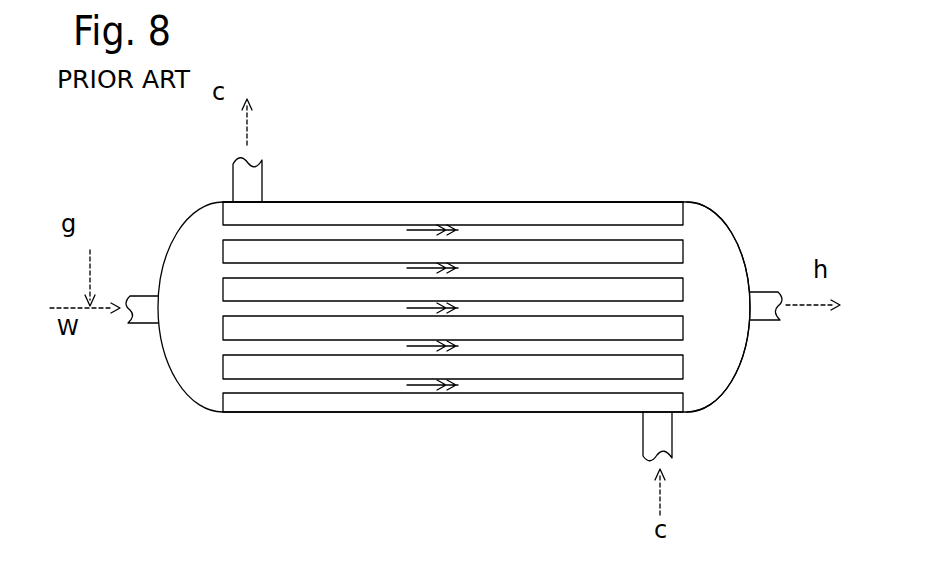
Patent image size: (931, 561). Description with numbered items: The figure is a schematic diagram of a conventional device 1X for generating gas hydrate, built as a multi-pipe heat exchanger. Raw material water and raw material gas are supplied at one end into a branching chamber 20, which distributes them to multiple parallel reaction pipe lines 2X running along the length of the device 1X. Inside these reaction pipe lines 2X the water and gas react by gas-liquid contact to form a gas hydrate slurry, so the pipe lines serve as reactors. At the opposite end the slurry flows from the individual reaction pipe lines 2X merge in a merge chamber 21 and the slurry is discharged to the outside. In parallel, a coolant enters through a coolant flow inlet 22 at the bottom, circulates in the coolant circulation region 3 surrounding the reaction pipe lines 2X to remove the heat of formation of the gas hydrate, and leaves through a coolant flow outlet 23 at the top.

The device for generating gas hydrate 1X is at (454, 264).
The reaction pipe lines 2X is at (518, 230).
The coolant circulation region 3 is at (603, 211).
The branching chamber 20 is at (190, 230).
The merge chamber 21 is at (714, 234).
The coolant flow inlet 22 is at (668, 440).
The coolant flow outlet 23 is at (256, 173).